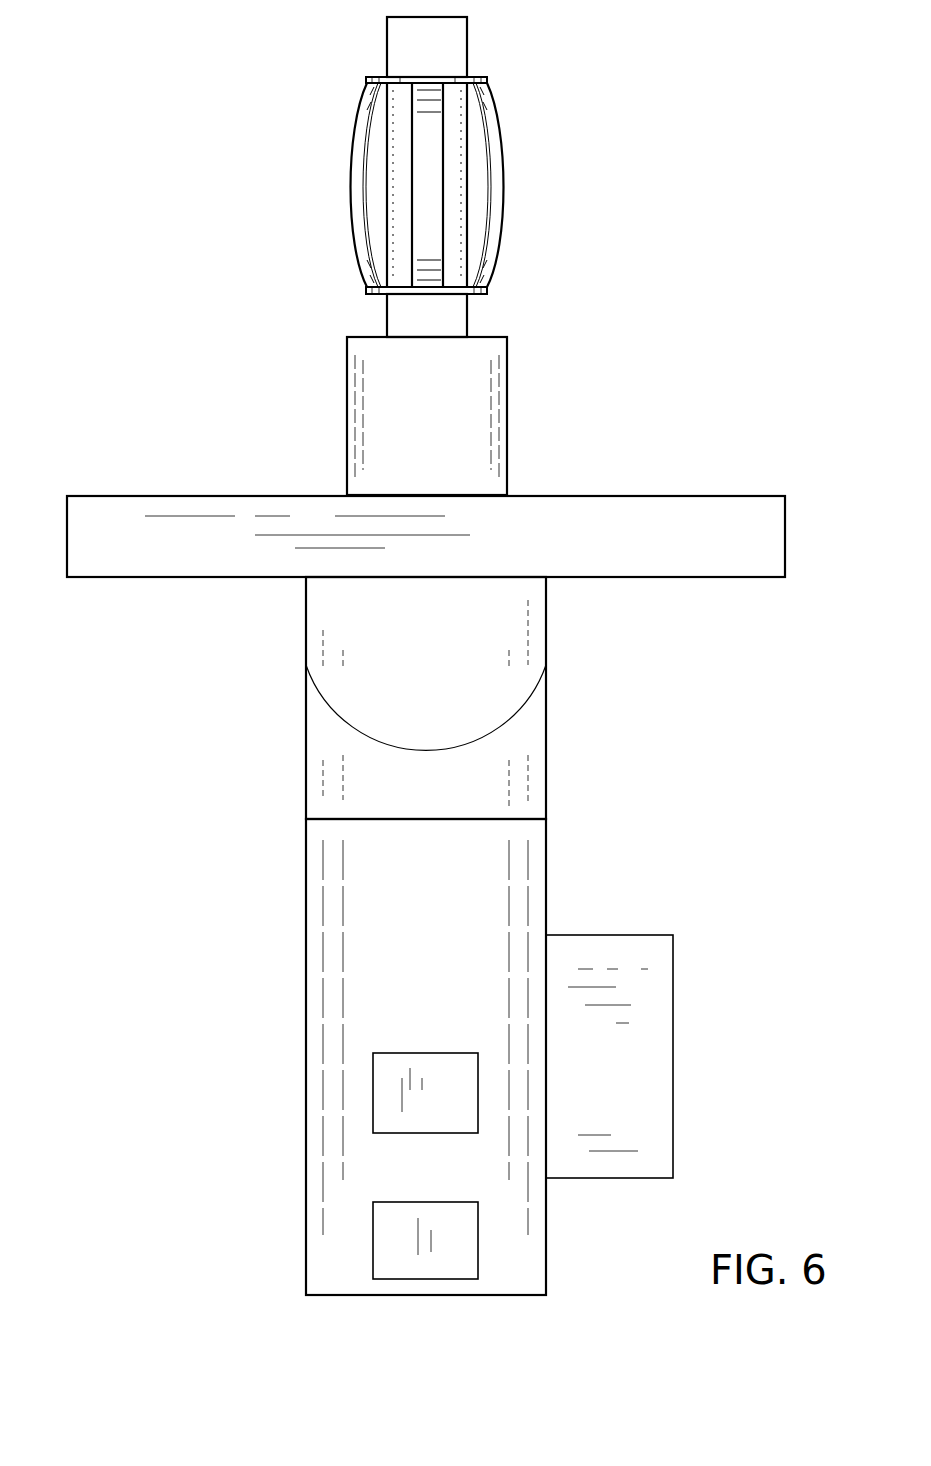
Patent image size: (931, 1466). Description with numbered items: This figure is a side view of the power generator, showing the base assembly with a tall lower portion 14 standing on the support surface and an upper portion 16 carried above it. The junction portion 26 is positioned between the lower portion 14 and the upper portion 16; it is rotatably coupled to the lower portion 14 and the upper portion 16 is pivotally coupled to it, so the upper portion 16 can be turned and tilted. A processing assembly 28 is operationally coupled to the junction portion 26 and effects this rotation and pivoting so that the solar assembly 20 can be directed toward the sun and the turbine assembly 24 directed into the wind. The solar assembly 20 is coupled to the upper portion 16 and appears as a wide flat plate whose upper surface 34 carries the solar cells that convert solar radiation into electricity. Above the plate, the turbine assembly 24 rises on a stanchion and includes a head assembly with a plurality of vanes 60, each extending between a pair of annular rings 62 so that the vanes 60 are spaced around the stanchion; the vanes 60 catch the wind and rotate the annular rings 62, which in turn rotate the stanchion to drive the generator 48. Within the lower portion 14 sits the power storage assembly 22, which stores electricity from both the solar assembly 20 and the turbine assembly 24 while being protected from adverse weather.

The lower portion 14 is at (489, 902).
The upper portion 16 is at (508, 625).
The solar assembly 20 is at (679, 445).
The power storage assembly 22 is at (399, 1269).
The turbine assembly 24 is at (576, 328).
The junction portion 26 is at (425, 747).
The processing assembly 28 is at (647, 1067).
The upper surface 34 is at (557, 497).
The generator 48 is at (387, 1073).
The vanes 60 is at (500, 183).
The annular rings 62 is at (420, 81).